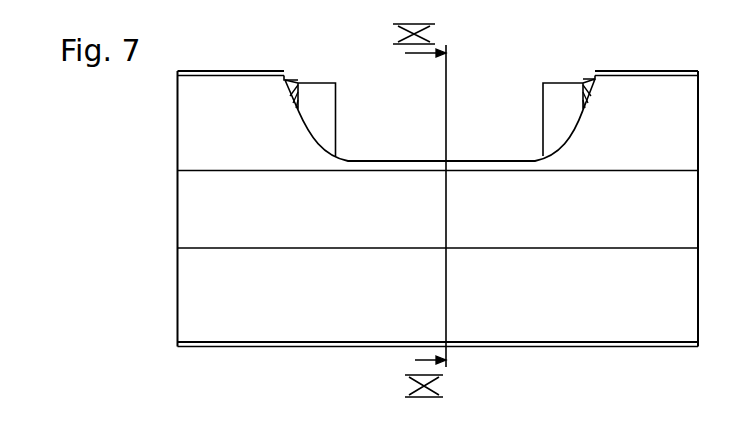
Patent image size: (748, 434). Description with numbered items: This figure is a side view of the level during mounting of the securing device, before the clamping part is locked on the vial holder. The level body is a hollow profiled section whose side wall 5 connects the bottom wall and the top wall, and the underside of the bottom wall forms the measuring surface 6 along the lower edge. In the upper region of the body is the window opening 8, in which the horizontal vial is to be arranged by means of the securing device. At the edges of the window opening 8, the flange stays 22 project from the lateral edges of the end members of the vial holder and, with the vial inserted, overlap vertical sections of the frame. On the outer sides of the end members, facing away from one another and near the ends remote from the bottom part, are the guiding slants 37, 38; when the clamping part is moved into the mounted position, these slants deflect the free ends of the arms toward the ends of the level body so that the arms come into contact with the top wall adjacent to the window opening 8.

The side wall 5 is at (216, 277).
The measuring surface 6 is at (255, 347).
The window opening 8 is at (385, 123).
The flange stays 22 is at (326, 98).
The guiding slant 37 is at (286, 94).
The guiding slant 38 is at (593, 92).